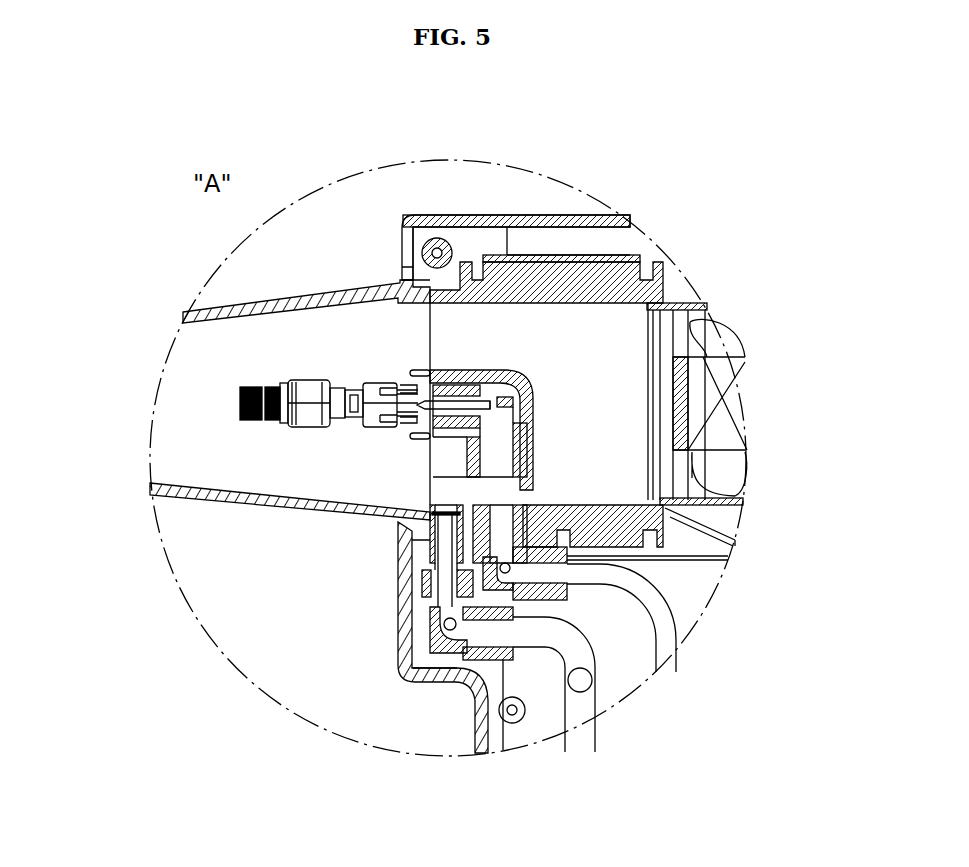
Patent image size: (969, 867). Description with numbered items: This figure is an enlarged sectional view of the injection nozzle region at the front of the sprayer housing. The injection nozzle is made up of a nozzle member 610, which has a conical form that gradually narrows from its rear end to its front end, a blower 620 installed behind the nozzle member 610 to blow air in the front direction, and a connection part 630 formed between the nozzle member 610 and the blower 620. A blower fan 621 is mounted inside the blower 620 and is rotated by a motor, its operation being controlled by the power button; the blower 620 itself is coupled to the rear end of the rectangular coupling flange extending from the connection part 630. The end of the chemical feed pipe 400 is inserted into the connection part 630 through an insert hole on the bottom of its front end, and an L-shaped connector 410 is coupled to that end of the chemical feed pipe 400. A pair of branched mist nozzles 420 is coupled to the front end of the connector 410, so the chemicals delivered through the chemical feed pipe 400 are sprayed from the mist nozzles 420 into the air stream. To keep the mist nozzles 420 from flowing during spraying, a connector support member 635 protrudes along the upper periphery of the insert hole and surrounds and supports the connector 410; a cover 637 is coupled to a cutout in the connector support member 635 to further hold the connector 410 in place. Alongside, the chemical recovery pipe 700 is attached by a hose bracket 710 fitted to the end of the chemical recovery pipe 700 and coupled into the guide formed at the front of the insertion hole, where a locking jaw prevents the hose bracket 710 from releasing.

The chemical feed pipe 400 is at (673, 602).
The connector 410 is at (700, 563).
The mist nozzle 420 is at (238, 396).
The nozzle member 610 is at (252, 306).
The blower 620 is at (692, 302).
The blower fan 621 is at (712, 336).
The connection part 630 is at (555, 275).
The connector support member 635 is at (492, 372).
The cover 637 is at (430, 457).
The chemical recovery pipe 700 is at (600, 667).
The hose bracket 710 is at (432, 543).